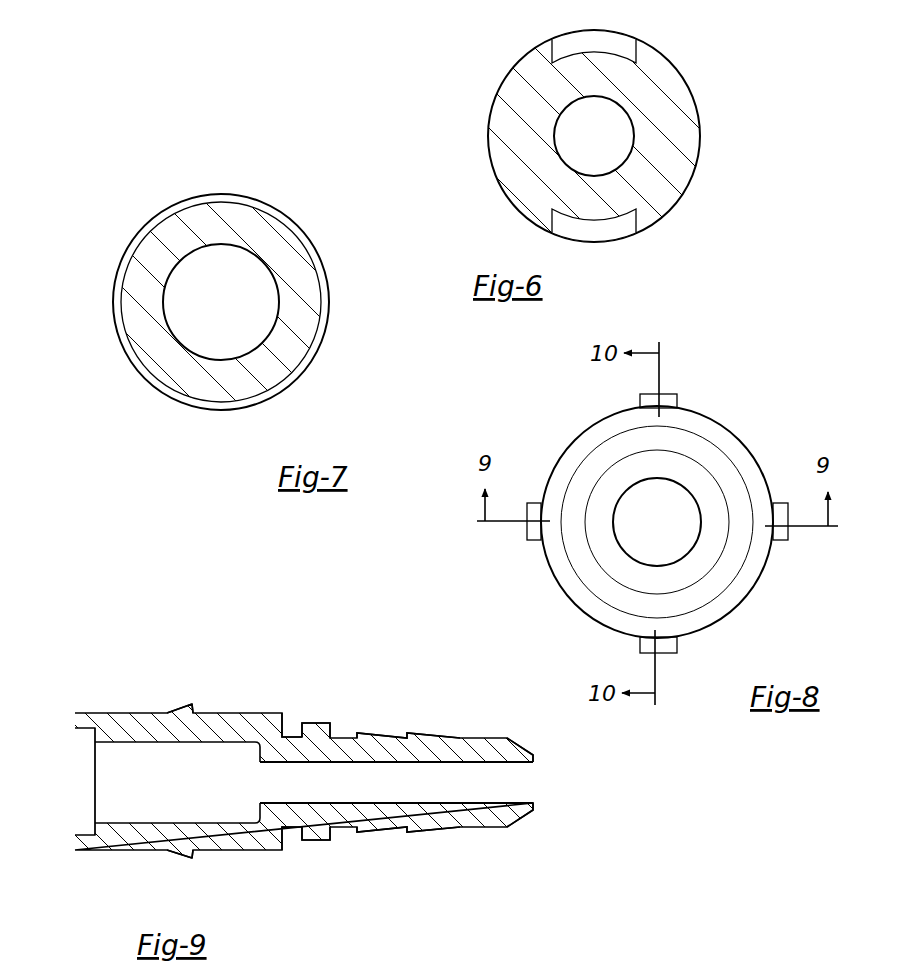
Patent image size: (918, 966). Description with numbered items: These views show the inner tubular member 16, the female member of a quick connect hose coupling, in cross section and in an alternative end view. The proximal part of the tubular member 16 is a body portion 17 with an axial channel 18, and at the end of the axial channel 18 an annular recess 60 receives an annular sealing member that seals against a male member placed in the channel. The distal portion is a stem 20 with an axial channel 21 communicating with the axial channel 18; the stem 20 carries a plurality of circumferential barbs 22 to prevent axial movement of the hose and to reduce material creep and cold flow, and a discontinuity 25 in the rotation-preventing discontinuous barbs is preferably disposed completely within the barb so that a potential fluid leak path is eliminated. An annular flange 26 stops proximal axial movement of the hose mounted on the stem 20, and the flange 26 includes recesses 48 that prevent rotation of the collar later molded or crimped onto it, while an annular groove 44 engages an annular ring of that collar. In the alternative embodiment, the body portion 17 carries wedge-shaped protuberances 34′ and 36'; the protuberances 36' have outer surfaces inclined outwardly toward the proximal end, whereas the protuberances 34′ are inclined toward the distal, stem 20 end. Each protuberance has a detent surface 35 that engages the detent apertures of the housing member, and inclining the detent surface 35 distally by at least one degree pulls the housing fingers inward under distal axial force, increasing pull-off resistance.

In FIG. 9, the tubular member 16 is at (263, 856).
In FIG. 8, the body portion 17 is at (728, 450).
In FIG. 9, the body portion 17 is at (115, 720).
In FIG. 9, the axial channel 18 is at (125, 787).
In FIG. 7, the stem 20 is at (287, 348).
In FIG. 9, the stem 20 is at (500, 817).
In FIG. 6, the axial channel 21 is at (586, 130).
In FIG. 7, the axial channel 21 is at (252, 260).
In FIG. 9, the axial channel 21 is at (516, 783).
In FIG. 9, the circumferential barbs 22 is at (460, 737).
In FIG. 7, the discontinuity 25 is at (117, 298).
In FIG. 6, the annular flange 26 is at (667, 120).
In FIG. 9, the annular flange 26 is at (310, 728).
In FIG. 8, the wedge-shaped protuberances 34′ is at (530, 530).
In FIG. 9, the wedge-shaped protuberances 34′ is at (187, 705).
In FIG. 9, the detent surface 35 is at (195, 710).
In FIG. 8, the wedge-shaped protuberances 36' is at (694, 520).
In FIG. 9, the annular groove 44 is at (292, 735).
In FIG. 6, the recesses 48 is at (580, 38).
In FIG. 9, the annular recess 60 is at (78, 735).